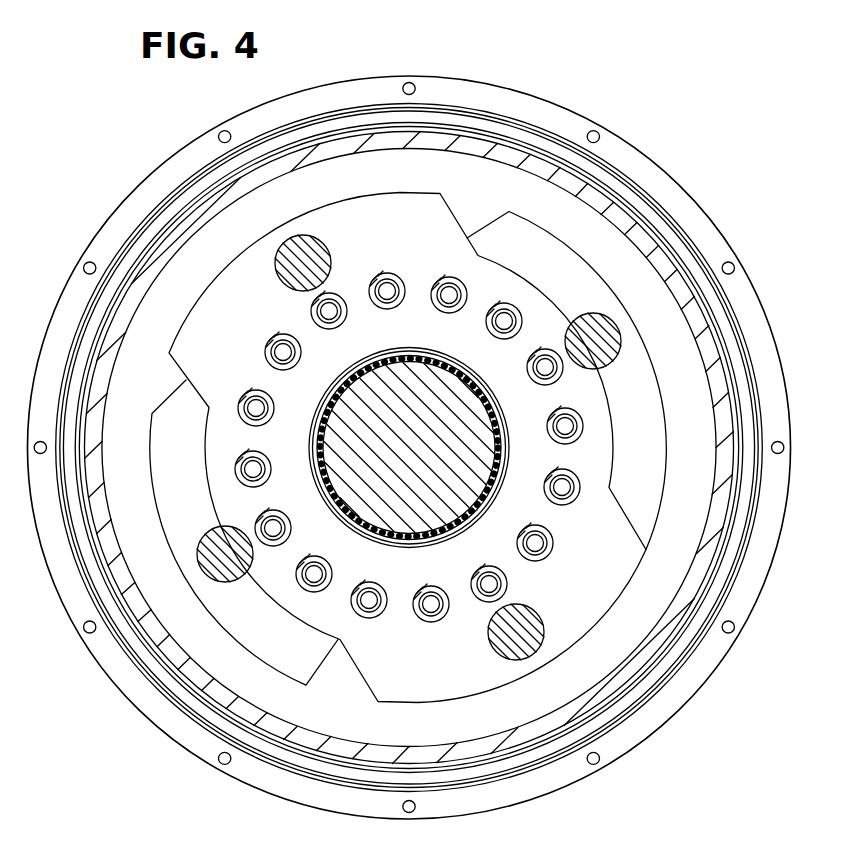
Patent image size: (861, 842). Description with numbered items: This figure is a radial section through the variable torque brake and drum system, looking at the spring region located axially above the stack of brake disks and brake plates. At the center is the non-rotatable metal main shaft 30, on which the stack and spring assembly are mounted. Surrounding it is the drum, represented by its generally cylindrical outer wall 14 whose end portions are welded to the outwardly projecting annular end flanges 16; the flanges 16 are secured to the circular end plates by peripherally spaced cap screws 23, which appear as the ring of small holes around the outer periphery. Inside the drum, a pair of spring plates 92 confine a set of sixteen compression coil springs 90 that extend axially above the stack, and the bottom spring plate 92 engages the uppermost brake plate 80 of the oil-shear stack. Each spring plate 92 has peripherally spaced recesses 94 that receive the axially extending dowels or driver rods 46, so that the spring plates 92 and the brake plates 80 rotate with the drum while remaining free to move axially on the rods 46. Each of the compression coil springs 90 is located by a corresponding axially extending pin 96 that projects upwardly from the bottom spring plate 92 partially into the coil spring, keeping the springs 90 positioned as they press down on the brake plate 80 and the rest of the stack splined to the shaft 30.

The cylindrical outer wall 14 is at (697, 591).
The annular end flanges 16 is at (650, 174).
The cap screws 23 is at (734, 264).
The main shaft 30 is at (444, 413).
The driver rods 46 is at (293, 254).
The brake plate 80 is at (657, 475).
The compression coil springs 90 is at (436, 278).
The spring plates 92 is at (397, 633).
The recesses 94 is at (302, 289).
The pin 96 is at (364, 604).